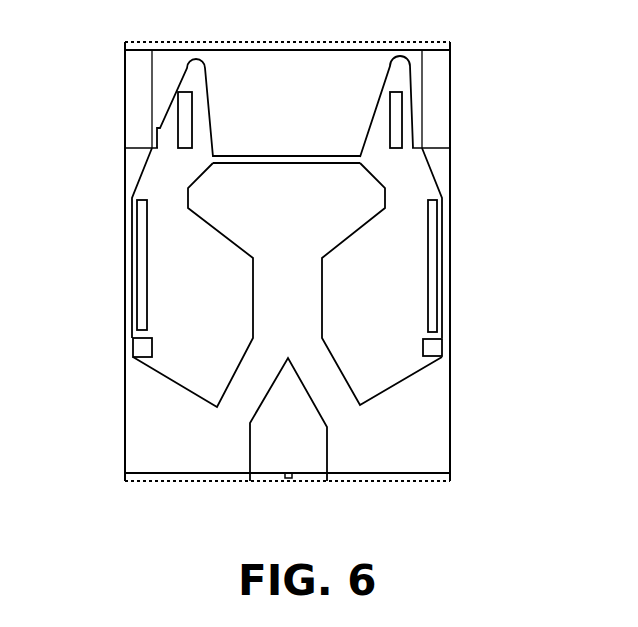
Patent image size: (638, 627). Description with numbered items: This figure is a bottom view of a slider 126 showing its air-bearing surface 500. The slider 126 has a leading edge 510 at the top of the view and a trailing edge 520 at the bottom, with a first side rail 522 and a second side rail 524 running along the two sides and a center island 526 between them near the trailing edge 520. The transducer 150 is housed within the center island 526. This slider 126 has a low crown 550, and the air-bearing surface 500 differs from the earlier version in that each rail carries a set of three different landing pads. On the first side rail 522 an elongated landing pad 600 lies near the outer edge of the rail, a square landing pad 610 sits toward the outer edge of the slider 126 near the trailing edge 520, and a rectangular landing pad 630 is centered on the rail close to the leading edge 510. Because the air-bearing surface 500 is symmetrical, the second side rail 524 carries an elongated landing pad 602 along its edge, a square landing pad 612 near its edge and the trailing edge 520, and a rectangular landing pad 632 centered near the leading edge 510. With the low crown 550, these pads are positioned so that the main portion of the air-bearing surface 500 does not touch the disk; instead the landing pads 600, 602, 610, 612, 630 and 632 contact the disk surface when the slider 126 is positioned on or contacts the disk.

The leading edge 510 is at (313, 50).
The air-bearing surface 500 is at (440, 120).
The slider 126 is at (450, 173).
The low crown 550 is at (243, 332).
The first side rail 522 is at (162, 372).
The second side rail 524 is at (412, 368).
The rectangular landing pad 630 is at (183, 122).
The rectangular landing pad 632 is at (398, 112).
The elongated landing pad 600 is at (140, 247).
The elongated landing pad 602 is at (435, 242).
The square landing pad 610 is at (143, 350).
The square landing pad 612 is at (432, 350).
The center island 526 is at (313, 465).
The transducer 150 is at (288, 478).
The trailing edge 520 is at (225, 473).